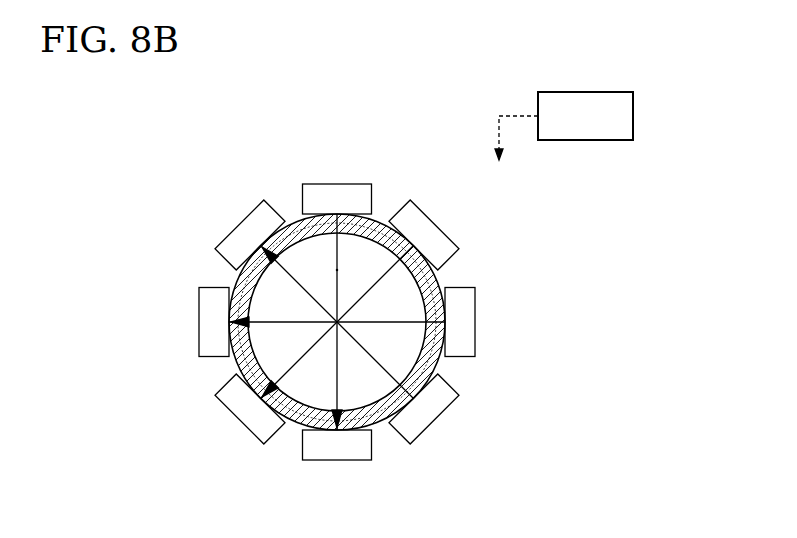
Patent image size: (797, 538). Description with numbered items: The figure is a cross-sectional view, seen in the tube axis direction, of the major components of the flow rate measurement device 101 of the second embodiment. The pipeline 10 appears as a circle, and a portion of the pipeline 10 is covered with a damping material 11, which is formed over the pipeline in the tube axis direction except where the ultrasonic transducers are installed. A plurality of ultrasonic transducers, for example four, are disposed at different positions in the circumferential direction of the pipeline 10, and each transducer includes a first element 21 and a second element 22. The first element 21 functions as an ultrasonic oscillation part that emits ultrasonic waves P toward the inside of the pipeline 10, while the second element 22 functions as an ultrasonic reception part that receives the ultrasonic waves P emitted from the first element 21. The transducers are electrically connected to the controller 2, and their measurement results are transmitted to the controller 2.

The pipeline 10 is at (228, 283).
The damping material 11 is at (452, 275).
The ultrasonic waves P is at (330, 270).
The first element 21 is at (333, 198).
The second element 22 is at (240, 228).
The controller 2 is at (577, 103).
The flow rate measurement device 101 is at (676, 108).